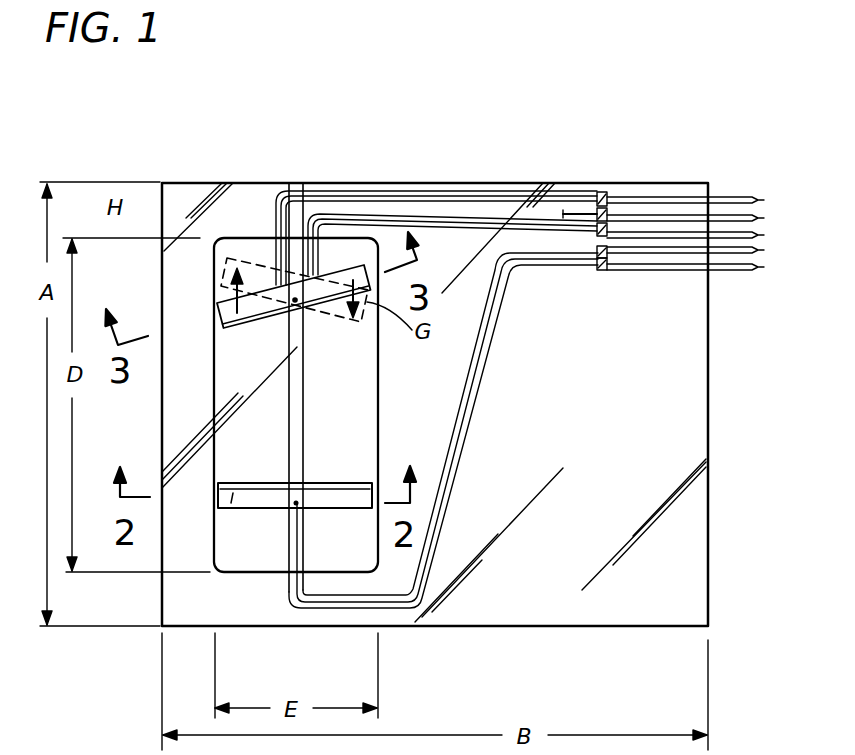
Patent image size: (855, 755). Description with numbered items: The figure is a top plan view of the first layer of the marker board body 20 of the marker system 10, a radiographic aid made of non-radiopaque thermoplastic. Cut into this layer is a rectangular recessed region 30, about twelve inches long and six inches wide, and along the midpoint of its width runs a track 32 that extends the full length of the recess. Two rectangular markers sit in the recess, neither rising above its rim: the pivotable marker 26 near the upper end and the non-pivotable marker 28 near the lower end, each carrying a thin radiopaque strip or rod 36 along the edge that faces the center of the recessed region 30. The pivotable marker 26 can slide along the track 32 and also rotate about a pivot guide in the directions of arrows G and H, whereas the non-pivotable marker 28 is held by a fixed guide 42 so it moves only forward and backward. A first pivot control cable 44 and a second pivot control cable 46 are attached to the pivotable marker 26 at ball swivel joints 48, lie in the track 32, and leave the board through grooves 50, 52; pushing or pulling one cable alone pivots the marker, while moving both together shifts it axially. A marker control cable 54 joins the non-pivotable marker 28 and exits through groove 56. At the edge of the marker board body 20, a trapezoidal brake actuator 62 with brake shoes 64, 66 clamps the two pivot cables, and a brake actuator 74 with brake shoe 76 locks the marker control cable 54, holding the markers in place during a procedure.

The marker system 10 is at (568, 106).
The marker board body 20 is at (570, 538).
The pivotable marker 26 is at (335, 263).
The non-pivotable marker 28 is at (232, 497).
The recessed region 30 is at (215, 385).
The track 32 is at (307, 407).
The radiopaque strip or rod 36 is at (243, 300).
The fixed guide 42 is at (322, 490).
The first pivot control cable 44 is at (310, 215).
The second pivot control cable 46 is at (283, 265).
The ball swivel joint 48 is at (220, 186).
The groove 50 is at (487, 222).
The groove 52 is at (416, 192).
The marker control cable 54 is at (303, 535).
The groove 56 is at (420, 615).
The brake actuator 62 is at (603, 193).
The brake shoe 64 is at (607, 209).
The brake shoe 66 is at (608, 227).
The brake actuator 74 is at (597, 251).
The brake shoe 76 is at (602, 268).